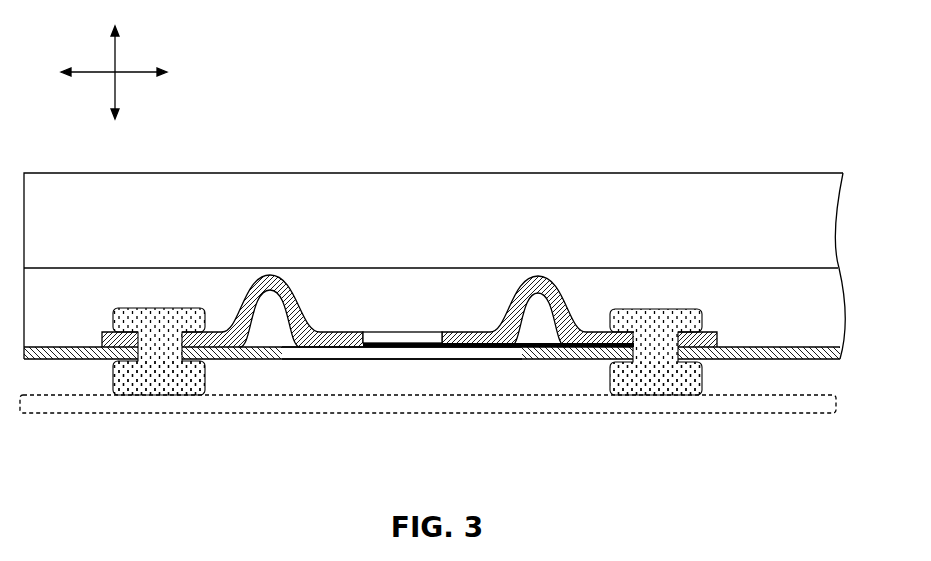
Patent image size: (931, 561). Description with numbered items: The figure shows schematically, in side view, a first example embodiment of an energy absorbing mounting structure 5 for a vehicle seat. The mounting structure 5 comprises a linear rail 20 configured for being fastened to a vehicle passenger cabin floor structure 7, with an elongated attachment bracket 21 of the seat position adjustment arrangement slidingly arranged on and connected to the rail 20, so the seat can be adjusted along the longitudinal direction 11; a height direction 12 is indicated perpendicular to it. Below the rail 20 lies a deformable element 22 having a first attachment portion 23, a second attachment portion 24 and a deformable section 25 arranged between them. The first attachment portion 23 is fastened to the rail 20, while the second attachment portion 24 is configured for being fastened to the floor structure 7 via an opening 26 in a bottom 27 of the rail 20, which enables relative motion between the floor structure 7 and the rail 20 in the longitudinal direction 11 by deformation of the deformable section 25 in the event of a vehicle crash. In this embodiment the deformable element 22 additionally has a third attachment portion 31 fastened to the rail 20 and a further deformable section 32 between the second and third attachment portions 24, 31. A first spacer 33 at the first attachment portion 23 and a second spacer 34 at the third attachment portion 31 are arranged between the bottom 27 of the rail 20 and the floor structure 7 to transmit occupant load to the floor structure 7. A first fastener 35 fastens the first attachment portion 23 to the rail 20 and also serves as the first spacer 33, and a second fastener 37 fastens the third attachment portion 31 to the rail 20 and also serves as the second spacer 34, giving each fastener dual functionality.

The energy absorbing mounting structure 5 is at (763, 125).
The vehicle passenger cabin floor structure 7 is at (128, 404).
The longitudinal direction 11 is at (123, 59).
The height direction 12 is at (118, 59).
The rail 20 is at (397, 300).
The attachment bracket 21 is at (478, 215).
The deformable element 22 is at (478, 347).
The first attachment portion 23 is at (212, 352).
The second attachment portion 24 is at (382, 340).
The deformable section 25 is at (272, 293).
The opening 26 is at (498, 355).
The bottom 27 is at (73, 358).
The third attachment portion 31 is at (703, 347).
The further deformable section 32 is at (547, 285).
The first spacer 33 is at (164, 392).
The second spacer 34 is at (667, 383).
The first fastener 35 is at (160, 320).
The second fastener 37 is at (650, 323).